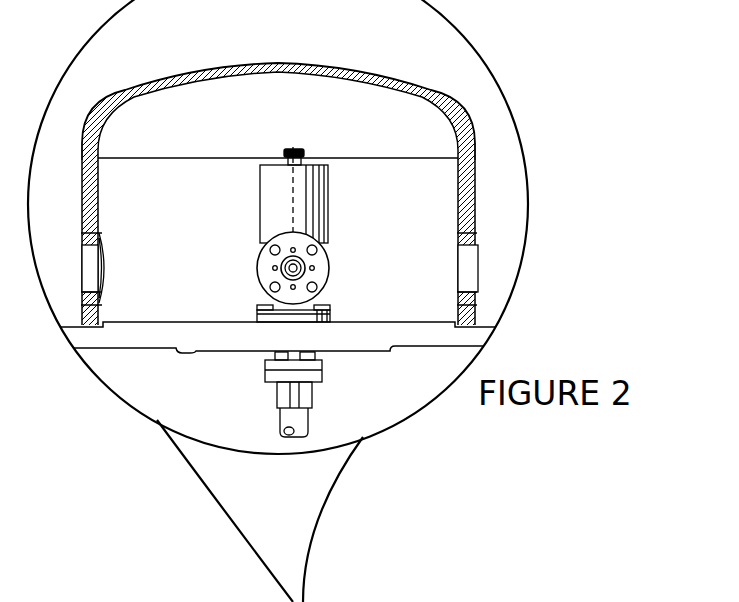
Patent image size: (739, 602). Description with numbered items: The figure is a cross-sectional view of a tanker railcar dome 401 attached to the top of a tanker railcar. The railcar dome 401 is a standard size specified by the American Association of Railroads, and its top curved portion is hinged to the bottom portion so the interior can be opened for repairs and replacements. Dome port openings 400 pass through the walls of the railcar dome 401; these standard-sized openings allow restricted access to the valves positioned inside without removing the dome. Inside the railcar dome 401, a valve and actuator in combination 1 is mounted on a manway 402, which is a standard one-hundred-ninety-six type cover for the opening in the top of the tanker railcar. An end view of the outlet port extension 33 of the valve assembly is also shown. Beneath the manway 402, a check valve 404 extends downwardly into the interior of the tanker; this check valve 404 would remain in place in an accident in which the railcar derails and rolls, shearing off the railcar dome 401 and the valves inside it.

The valve and actuator in combination 1 is at (342, 234).
The outlet port extension 33 is at (329, 268).
The dome port openings 400 is at (470, 268).
The railcar dome 401 is at (243, 63).
The manway 402 is at (233, 355).
The check valve 404 is at (322, 382).